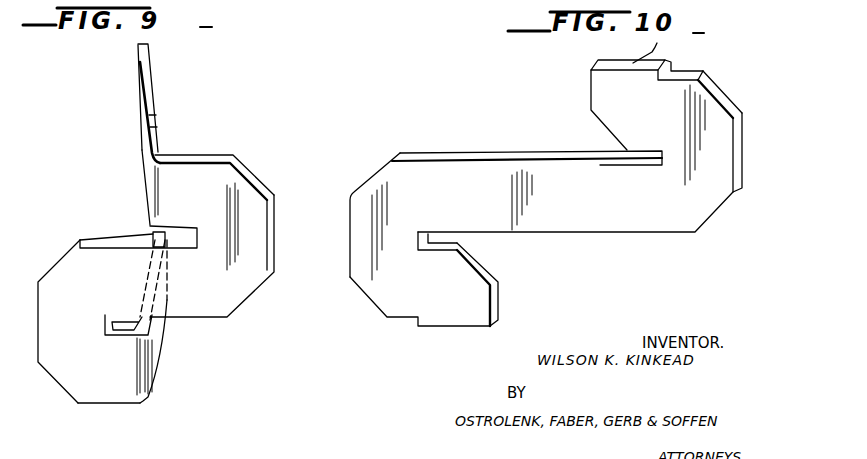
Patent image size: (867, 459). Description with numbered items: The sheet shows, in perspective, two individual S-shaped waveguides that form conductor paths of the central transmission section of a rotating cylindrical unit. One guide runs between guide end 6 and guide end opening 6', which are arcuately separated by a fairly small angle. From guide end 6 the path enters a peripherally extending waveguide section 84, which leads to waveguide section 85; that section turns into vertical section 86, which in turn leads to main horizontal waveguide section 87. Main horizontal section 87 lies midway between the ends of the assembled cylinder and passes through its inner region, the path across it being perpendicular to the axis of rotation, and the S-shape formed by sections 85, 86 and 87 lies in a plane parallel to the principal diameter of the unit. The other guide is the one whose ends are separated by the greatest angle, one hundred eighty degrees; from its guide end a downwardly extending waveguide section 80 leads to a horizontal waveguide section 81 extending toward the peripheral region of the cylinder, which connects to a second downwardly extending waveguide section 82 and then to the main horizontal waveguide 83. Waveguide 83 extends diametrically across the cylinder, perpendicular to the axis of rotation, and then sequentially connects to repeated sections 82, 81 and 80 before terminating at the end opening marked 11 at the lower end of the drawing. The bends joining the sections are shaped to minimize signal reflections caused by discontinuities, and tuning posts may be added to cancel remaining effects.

In FIG. 9, the guide end 6 is at (162, 103).
In FIG. 9, the guide end opening 6' is at (168, 321).
In FIG. 10, the hanger member 11 is at (458, 318).
In FIG. 10, the downwardly extending waveguide section 80 is at (598, 97).
In FIG. 10, the horizontal waveguide section 81 is at (700, 108).
In FIG. 10, the downwardly extending waveguide section 82 is at (718, 158).
In FIG. 10, the main horizontal waveguide 83 is at (572, 222).
In FIG. 9, the peripherally extending waveguide section 84 is at (142, 137).
In FIG. 9, the waveguide section 85 is at (190, 177).
In FIG. 9, the vertical section 86 is at (247, 232).
In FIG. 9, the main horizontal waveguide section 87 is at (113, 260).